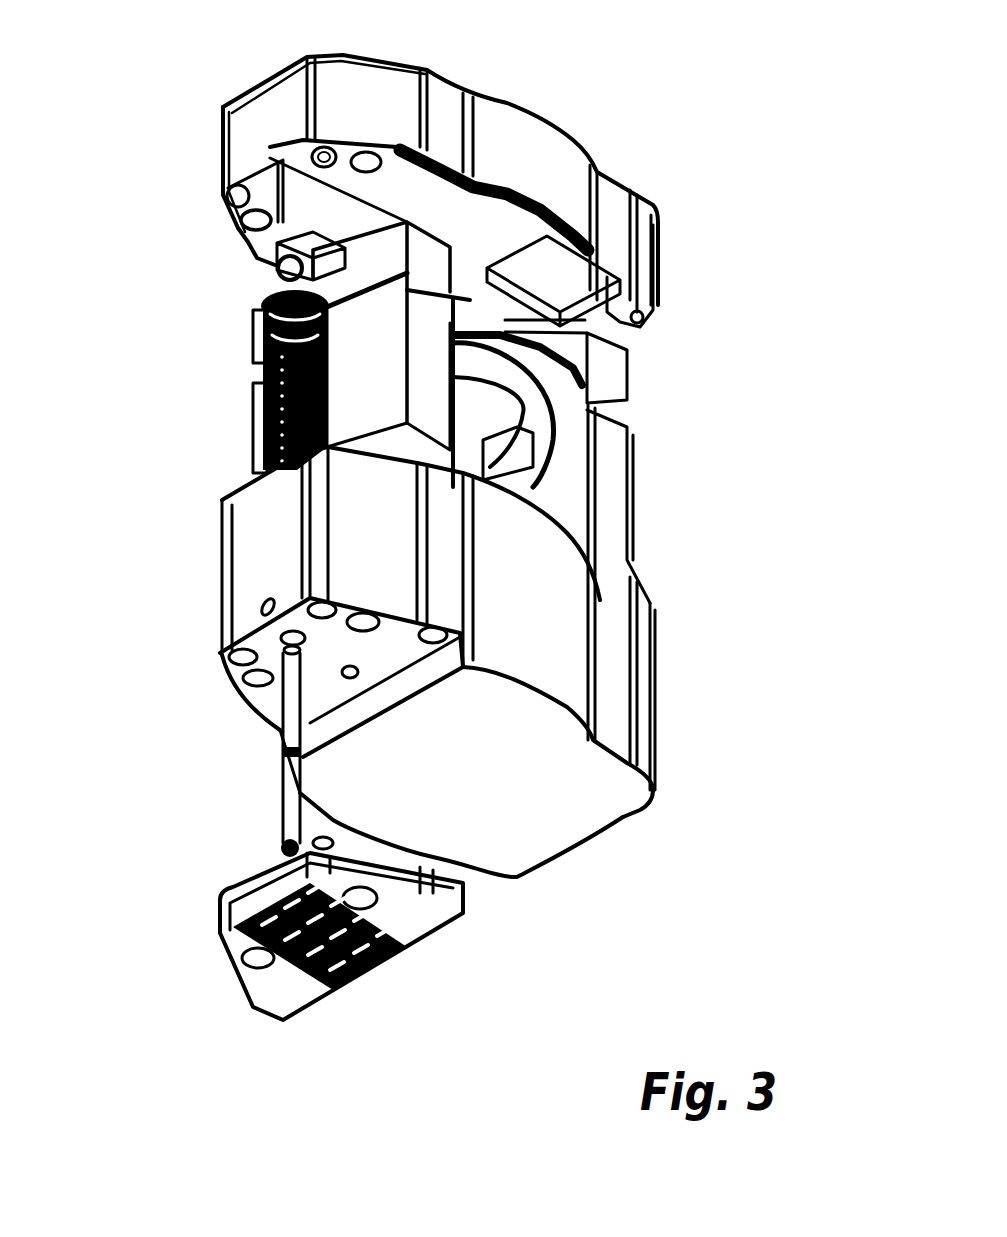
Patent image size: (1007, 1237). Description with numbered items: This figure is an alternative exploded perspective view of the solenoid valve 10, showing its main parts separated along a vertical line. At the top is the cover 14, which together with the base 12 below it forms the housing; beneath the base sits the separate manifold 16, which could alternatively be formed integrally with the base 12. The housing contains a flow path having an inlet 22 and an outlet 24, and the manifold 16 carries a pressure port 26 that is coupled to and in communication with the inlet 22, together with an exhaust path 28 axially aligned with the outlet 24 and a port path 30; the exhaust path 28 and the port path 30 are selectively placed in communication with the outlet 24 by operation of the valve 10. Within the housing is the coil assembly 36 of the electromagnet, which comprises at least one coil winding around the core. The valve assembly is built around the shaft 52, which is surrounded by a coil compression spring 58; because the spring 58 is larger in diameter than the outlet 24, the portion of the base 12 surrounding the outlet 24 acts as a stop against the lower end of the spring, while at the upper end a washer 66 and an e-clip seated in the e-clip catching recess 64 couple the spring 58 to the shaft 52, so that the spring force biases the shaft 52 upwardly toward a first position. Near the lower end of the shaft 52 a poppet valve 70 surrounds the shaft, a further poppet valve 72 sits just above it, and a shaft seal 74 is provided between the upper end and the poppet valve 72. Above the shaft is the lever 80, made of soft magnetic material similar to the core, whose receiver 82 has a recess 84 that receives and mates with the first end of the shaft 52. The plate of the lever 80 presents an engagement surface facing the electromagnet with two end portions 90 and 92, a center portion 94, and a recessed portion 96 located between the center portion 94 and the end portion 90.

The solenoid valve 10 is at (646, 884).
The base 12 is at (683, 685).
The cover 14 is at (598, 127).
The manifold 16 is at (328, 986).
The inlet 22 is at (355, 672).
The outlet 24 is at (237, 651).
The pressure port 26 is at (350, 1001).
The exhaust path 28 is at (222, 930).
The port path 30 is at (325, 983).
The coil assembly 36 is at (524, 417).
The shaft 52 is at (293, 706).
The coil compression spring 58 is at (268, 403).
The e-clip catching recess 64 is at (287, 644).
The washer 66 is at (278, 323).
The poppet valve 70 is at (280, 848).
The poppet valve 72 is at (280, 850).
The shaft seal 74 is at (283, 760).
The lever 80 is at (653, 368).
The receiver 82 is at (238, 229).
The recess 84 is at (283, 259).
The end portion 90 is at (614, 370).
The end portion 92 is at (380, 230).
The center portion 94 is at (489, 318).
The recessed portion 96 is at (548, 327).